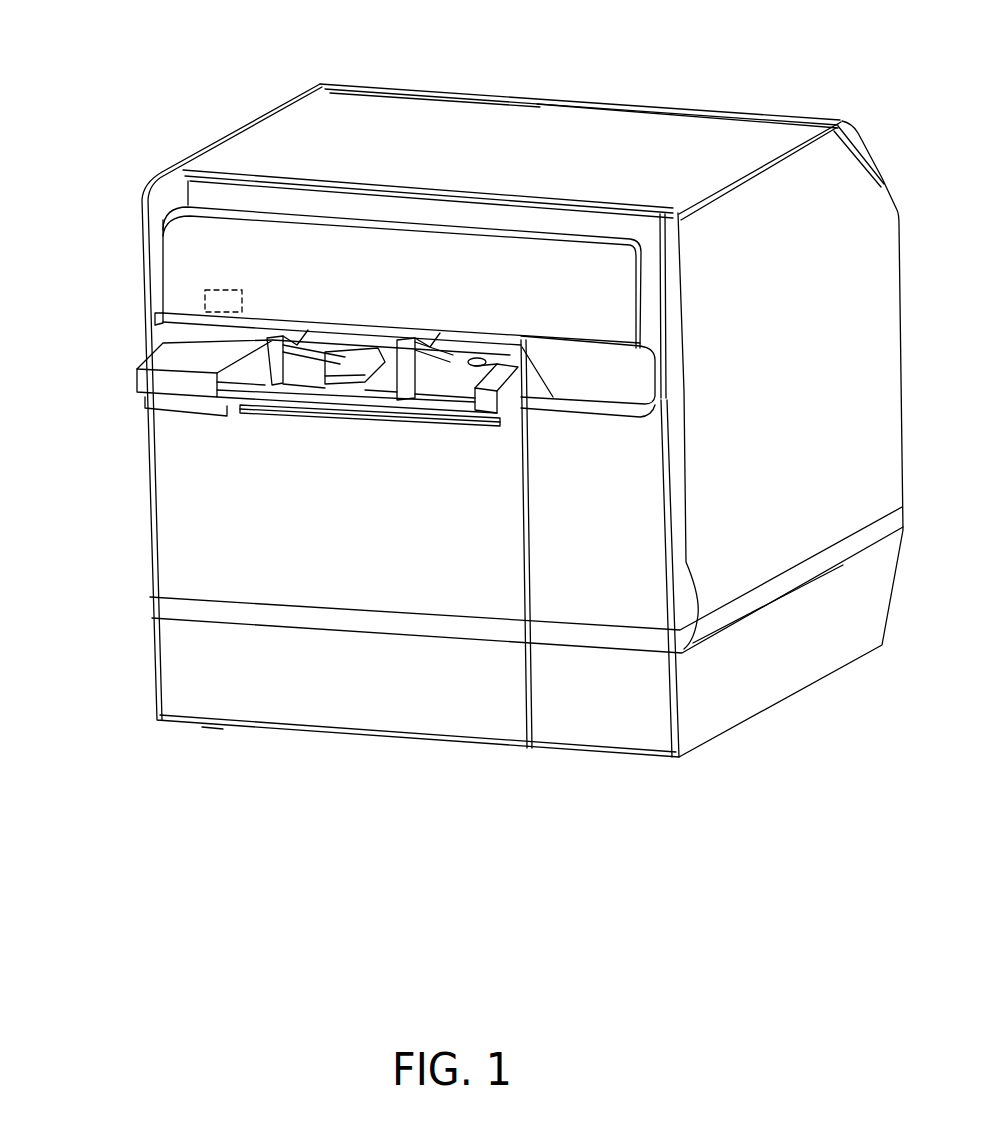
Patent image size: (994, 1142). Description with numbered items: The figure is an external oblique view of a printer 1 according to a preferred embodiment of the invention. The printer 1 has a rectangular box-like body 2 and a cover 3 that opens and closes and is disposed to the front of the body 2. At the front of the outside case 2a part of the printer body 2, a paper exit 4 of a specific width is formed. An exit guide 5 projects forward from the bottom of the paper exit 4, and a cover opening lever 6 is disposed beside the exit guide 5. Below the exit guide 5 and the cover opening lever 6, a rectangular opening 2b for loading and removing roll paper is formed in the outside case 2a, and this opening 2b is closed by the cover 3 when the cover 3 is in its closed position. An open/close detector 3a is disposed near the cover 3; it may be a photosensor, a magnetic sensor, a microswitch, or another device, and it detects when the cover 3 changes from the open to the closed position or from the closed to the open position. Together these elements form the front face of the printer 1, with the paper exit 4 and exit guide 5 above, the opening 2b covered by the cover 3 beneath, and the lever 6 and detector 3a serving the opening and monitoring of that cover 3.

The printer 1 is at (672, 97).
The body 2 is at (475, 95).
The outside case 2a is at (553, 138).
The rectangular opening 2b is at (423, 682).
The cover 3 is at (330, 578).
The open/close detector 3a is at (207, 300).
The paper exit 4 is at (353, 340).
The exit guide 5 is at (343, 390).
The cover opening lever 6 is at (193, 357).